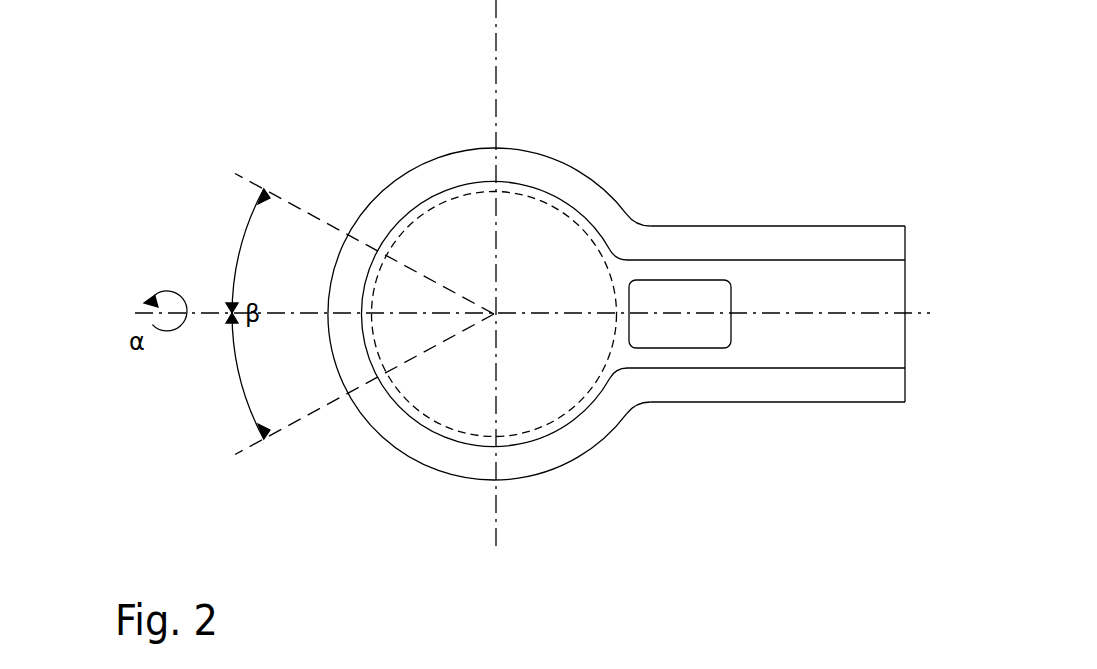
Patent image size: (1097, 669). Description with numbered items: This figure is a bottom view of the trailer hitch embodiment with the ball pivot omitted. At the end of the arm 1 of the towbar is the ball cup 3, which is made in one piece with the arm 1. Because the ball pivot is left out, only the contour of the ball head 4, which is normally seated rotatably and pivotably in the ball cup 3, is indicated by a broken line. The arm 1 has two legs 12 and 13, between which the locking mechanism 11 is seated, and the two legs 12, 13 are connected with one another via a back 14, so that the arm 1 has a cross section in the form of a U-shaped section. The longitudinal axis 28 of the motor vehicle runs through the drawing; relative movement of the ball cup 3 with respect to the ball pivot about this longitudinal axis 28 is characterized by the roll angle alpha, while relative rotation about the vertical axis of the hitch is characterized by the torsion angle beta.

The arm 1 is at (763, 314).
The ball cup 3 is at (440, 172).
The ball head 4 is at (482, 190).
The locking mechanism 11 is at (673, 333).
The leg 12 is at (761, 242).
The leg 13 is at (783, 388).
The back 14 is at (865, 282).
The longitudinal axis 28 is at (547, 313).